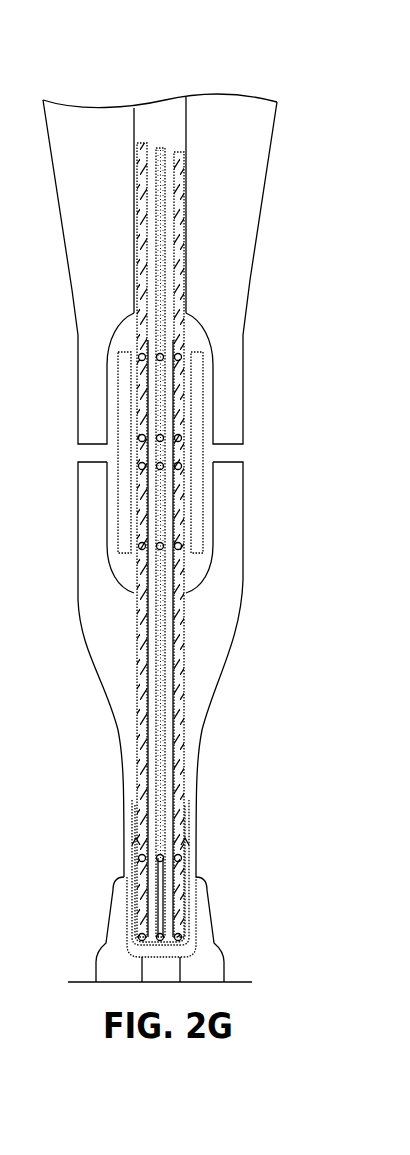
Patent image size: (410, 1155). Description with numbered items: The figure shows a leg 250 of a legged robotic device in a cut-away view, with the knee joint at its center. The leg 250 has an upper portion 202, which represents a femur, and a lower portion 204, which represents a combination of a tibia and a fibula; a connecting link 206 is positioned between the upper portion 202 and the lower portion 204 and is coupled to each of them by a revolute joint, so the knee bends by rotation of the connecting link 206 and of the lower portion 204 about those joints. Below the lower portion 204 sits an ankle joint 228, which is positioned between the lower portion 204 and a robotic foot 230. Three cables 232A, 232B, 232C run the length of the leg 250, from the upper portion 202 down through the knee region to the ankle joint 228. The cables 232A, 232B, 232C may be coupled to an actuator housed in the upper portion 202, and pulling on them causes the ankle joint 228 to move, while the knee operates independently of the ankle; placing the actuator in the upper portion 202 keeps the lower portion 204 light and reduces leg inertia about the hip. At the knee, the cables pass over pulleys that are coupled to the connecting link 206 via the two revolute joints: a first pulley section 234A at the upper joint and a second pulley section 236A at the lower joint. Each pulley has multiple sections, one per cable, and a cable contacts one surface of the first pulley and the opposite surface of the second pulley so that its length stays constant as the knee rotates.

The leg 250 is at (210, 79).
The upper portion 202 is at (70, 232).
The lower portion 204 is at (78, 593).
The connecting link 206 is at (118, 418).
The ankle joint 228 is at (195, 850).
The robotic foot 230 is at (103, 945).
The cable 232A is at (140, 195).
The cable 232B is at (164, 152).
The cable 232C is at (181, 177).
The first pulley section 234A is at (180, 355).
The second pulley section 236A is at (180, 464).